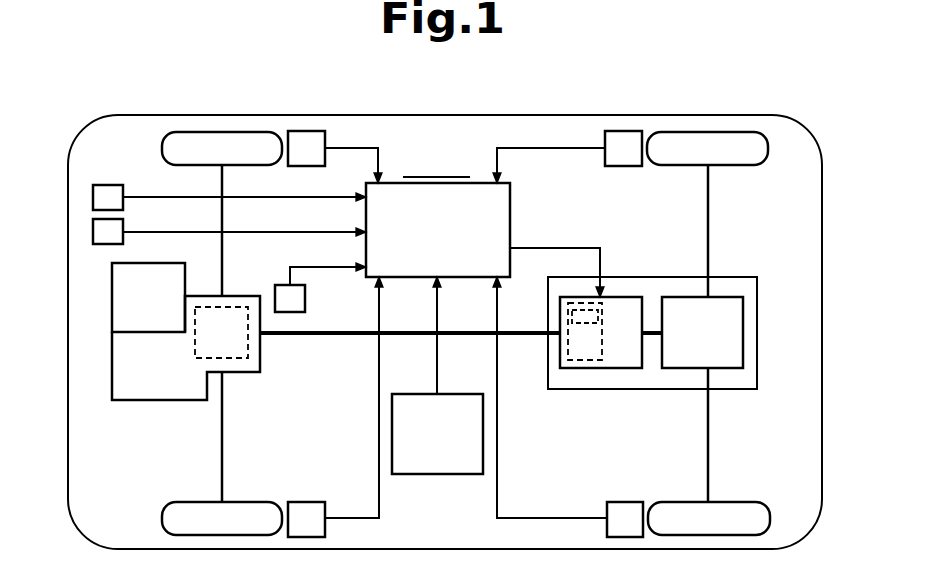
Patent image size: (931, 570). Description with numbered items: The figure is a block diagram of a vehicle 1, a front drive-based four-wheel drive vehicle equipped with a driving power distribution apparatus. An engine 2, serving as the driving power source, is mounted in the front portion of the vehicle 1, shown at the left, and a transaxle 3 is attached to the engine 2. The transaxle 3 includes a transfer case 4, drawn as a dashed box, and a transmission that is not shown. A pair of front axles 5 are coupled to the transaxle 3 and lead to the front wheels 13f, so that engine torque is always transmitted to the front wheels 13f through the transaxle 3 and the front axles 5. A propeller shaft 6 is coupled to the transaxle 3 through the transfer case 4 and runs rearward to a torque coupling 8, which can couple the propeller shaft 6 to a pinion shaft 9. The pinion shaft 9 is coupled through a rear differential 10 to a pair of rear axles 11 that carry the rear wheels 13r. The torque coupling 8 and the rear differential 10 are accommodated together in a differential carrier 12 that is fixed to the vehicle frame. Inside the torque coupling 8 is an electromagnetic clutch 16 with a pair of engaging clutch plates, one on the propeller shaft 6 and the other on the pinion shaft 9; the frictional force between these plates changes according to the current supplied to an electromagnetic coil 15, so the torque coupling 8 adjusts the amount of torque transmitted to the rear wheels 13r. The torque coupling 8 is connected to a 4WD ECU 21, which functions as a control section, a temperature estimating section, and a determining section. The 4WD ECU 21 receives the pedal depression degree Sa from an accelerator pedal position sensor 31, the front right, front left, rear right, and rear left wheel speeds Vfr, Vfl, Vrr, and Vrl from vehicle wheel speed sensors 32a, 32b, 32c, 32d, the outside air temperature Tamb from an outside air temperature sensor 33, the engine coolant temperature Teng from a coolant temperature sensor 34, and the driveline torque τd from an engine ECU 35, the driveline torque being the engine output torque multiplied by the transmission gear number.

The vehicle 1 is at (444, 115).
The engine 2 is at (138, 308).
The transaxle 3 is at (148, 378).
The transfer case 4 is at (248, 345).
The front axles 5 is at (222, 262).
The propeller shaft 6 is at (343, 336).
The torque coupling 8 is at (626, 368).
The pinion shaft 9 is at (650, 336).
The rear differential 10 is at (688, 347).
The rear axles 11 is at (708, 247).
The differential carrier 12 is at (757, 333).
The front wheels 13f is at (221, 132).
The rear wheels 13r is at (740, 166).
The electromagnetic coil 15 is at (572, 313).
The electromagnetic clutch 16 is at (583, 362).
The 4WD ECU 21 is at (512, 217).
The accelerator pedal position sensor 31 is at (305, 299).
The vehicle wheel speed sensor 32a is at (307, 131).
The vehicle wheel speed sensor 32b is at (307, 502).
The vehicle wheel speed sensor 32c is at (625, 166).
The vehicle wheel speed sensor 32d is at (625, 502).
The outside air temperature sensor 33 is at (93, 195).
The coolant temperature sensor 34 is at (93, 228).
The engine ECU 35 is at (437, 474).